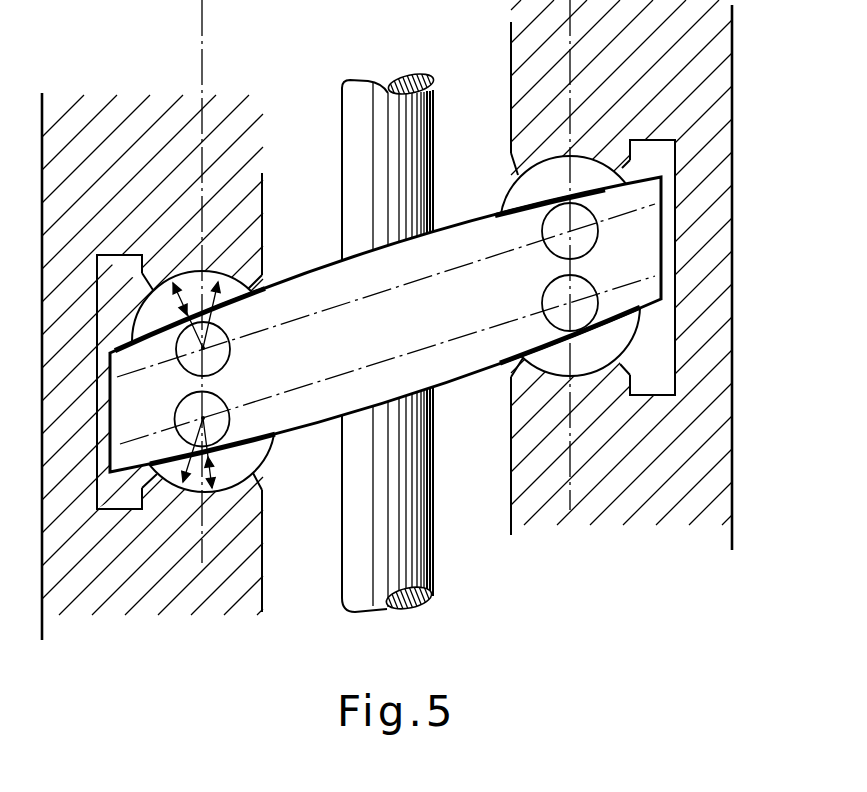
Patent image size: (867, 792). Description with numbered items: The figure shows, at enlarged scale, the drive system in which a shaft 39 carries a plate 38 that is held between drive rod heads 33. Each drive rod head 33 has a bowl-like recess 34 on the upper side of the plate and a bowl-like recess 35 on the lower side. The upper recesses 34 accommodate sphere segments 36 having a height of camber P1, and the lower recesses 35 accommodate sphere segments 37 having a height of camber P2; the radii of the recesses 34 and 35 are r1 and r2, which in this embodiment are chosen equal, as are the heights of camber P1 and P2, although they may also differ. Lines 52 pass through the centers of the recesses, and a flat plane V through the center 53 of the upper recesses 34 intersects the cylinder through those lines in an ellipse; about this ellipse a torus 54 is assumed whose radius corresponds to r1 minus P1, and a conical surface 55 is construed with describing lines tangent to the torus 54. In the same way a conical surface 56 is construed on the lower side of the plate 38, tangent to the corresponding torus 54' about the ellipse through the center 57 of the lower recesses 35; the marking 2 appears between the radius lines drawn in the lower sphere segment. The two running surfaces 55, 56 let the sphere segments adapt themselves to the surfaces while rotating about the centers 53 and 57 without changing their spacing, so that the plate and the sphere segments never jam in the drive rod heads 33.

The drive rod head 33 is at (131, 185).
The bowl-like recess 34 is at (538, 157).
The bowl-like recess 35 is at (228, 487).
The sphere segment 36 is at (150, 328).
The lower ball 37 is at (250, 452).
The plate 38 is at (638, 238).
The shaft 39 is at (412, 185).
The line through the centers of the bowl-like recesses 52 is at (201, 39).
The center of the bowl-like recesses 53 is at (203, 348).
The torus 54 is at (387, 289).
The lower bearing hole 54' is at (361, 361).
The conical surface 55 is at (318, 272).
The conical surface 56 is at (322, 420).
The center of the bowl-like recesses 57 is at (209, 417).
The radius of the bowl-like recesses r1 is at (202, 316).
The radius of the bowl-like recesses r2 is at (188, 454).
The height of camber P1 is at (167, 318).
The height of camber P2 is at (218, 452).
The angle 2 is at (232, 466).
The flat plane V is at (688, 175).